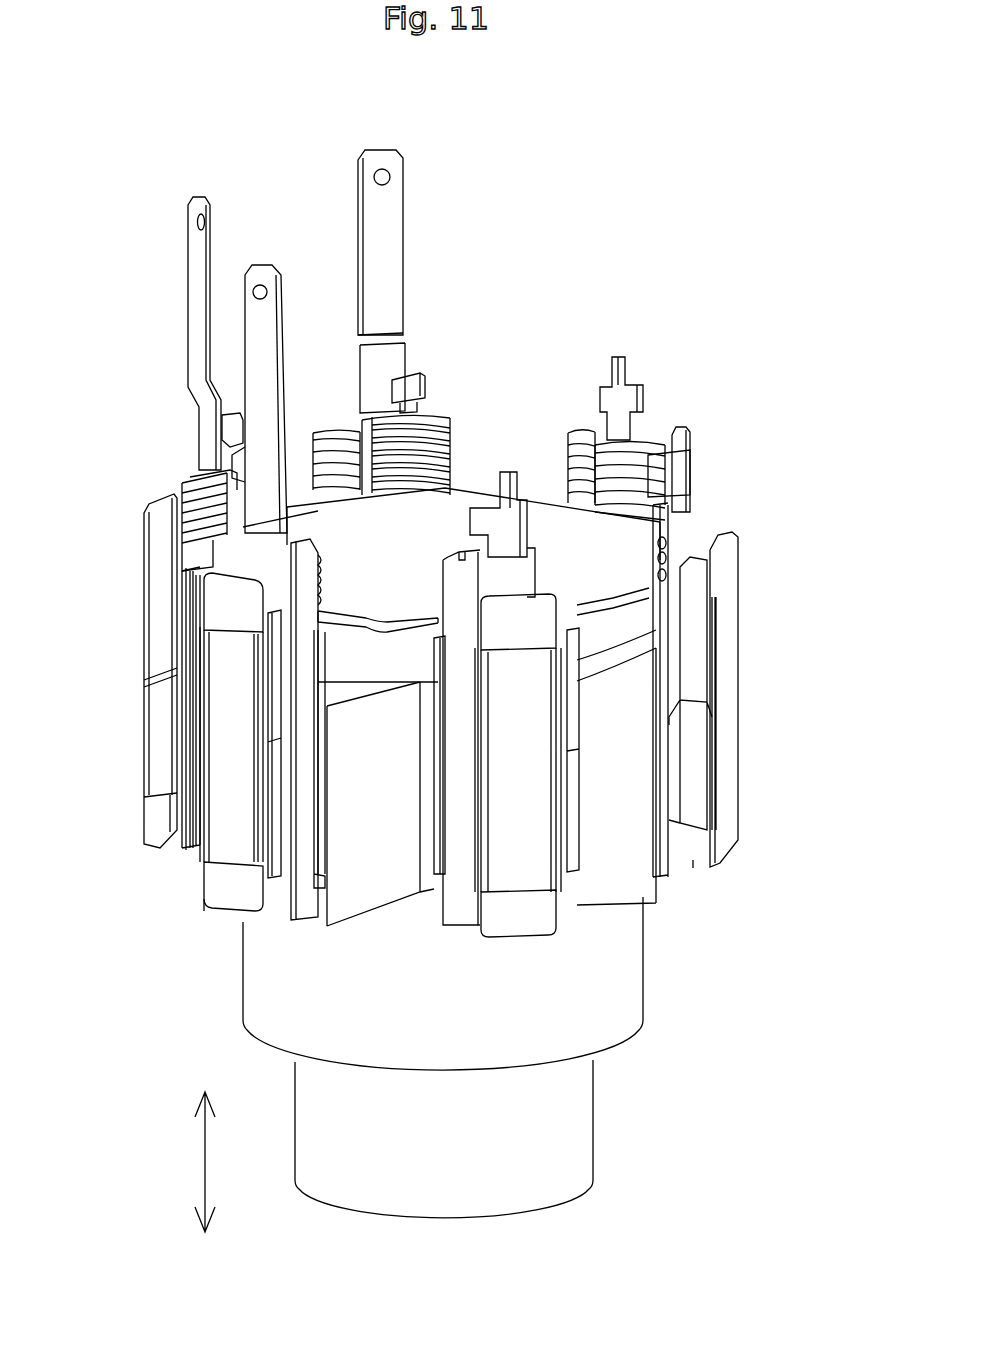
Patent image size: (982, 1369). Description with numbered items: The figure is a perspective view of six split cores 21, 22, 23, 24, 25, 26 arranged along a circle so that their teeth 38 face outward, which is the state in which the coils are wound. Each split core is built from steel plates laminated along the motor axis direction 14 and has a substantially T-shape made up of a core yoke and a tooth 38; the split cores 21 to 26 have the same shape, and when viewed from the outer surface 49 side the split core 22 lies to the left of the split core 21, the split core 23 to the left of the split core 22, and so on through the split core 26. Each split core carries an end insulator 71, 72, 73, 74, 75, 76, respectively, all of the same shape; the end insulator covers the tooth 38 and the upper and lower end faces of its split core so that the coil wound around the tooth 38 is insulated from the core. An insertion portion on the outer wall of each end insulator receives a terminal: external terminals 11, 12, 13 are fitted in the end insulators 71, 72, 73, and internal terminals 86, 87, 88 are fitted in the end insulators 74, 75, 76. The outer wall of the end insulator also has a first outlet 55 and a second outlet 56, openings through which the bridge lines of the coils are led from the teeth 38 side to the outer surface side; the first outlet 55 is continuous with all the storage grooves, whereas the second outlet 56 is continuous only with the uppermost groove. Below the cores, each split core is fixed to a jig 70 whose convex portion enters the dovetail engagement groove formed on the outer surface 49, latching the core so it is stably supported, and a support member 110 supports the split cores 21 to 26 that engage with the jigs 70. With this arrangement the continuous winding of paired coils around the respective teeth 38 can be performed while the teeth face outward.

The external terminal 11 is at (385, 228).
The external terminal 12 is at (188, 256).
The external terminal 13 is at (245, 338).
The motor axis direction 14 is at (205, 1160).
The split core 21 is at (432, 352).
The split core 22 is at (118, 508).
The split core 23 is at (190, 930).
The split core 24 is at (520, 810).
The split core 25 is at (762, 673).
The split core 26 is at (658, 427).
The tooth 38 is at (170, 858).
The outer surface 49 is at (186, 650).
The first outlet 55 is at (552, 523).
The second outlet 56 is at (437, 414).
The jig 70 is at (613, 820).
The end insulator 71 is at (335, 428).
The end insulator 72 is at (167, 475).
The end insulator 73 is at (311, 537).
The end insulator 74 is at (441, 546).
The end insulator 75 is at (650, 538).
The end insulator 76 is at (578, 426).
The internal terminal 86 is at (488, 475).
The internal terminal 87 is at (705, 458).
The internal terminal 88 is at (643, 378).
The support member 110 is at (634, 1082).